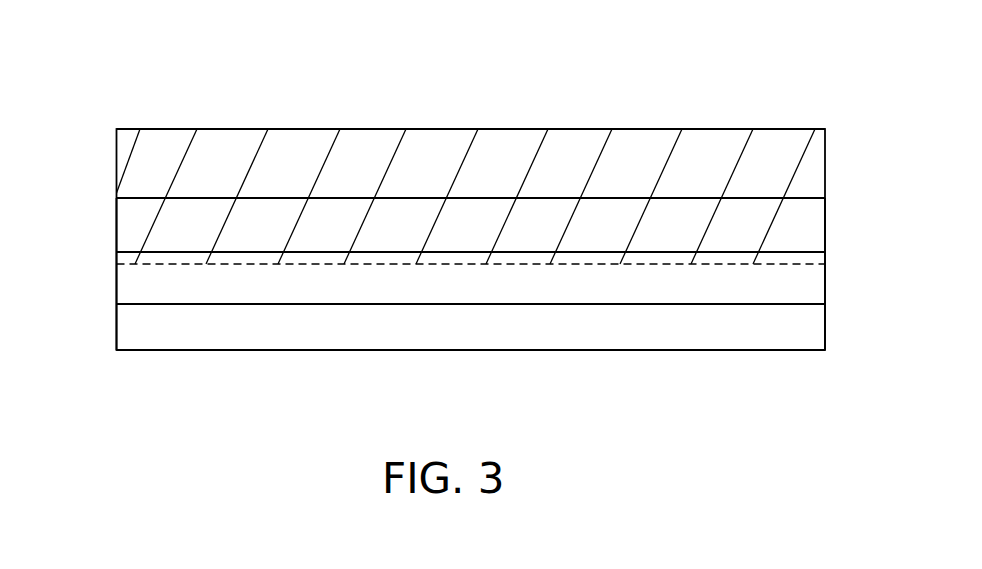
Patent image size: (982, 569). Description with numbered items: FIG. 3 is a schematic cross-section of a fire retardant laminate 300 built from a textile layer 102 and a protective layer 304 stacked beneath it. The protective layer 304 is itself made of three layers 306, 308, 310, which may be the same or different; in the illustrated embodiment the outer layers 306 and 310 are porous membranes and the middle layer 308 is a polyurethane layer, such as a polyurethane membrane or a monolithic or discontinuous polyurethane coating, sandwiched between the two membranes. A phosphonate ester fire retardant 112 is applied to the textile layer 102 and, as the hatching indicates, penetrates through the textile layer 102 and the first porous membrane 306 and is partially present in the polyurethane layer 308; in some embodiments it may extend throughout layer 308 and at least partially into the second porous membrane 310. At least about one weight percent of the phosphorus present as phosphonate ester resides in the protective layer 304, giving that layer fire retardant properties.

The fire retardant laminate 300 is at (171, 99).
The textile layer 102 is at (825, 162).
The fire retardant 112 is at (88, 260).
The protective layer 304 is at (109, 202).
The first porous membrane layer 306 is at (826, 232).
The polyurethane layer 308 is at (826, 292).
The second porous membrane layer 310 is at (826, 345).